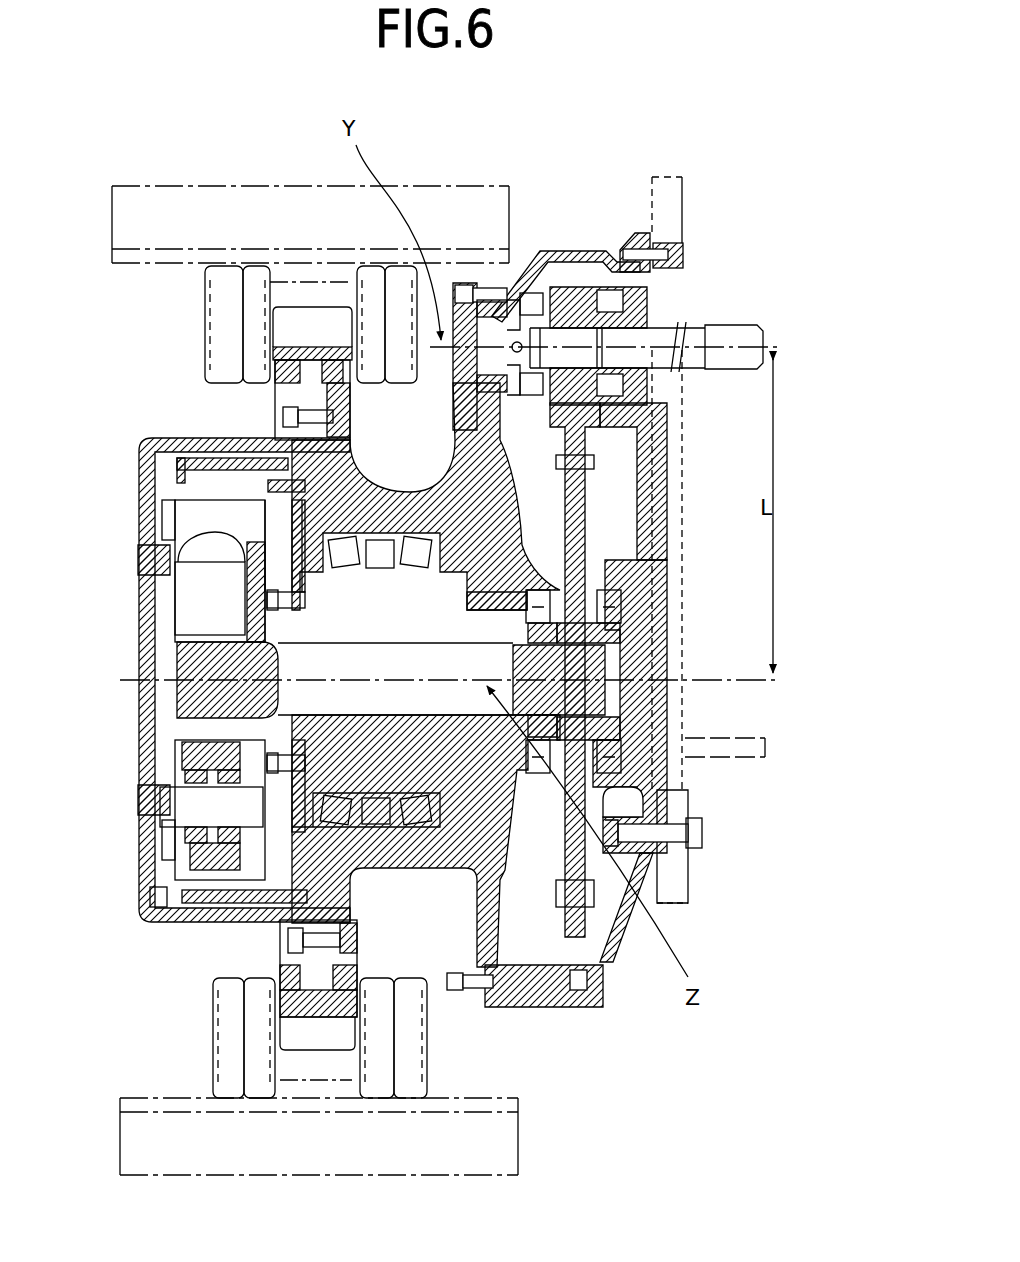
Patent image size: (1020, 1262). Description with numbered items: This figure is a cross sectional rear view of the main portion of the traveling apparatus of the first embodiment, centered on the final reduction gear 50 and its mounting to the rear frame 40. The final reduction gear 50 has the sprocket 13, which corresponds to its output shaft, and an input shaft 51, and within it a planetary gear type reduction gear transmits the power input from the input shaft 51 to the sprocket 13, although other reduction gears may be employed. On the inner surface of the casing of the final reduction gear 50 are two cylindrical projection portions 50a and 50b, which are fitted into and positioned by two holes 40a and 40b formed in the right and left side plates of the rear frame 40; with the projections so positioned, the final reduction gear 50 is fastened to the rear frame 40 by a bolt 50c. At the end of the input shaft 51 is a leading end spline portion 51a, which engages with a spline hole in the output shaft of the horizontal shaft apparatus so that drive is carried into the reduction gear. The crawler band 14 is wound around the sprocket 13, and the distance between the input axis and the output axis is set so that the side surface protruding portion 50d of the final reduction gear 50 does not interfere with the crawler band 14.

The sprocket 13 is at (300, 328).
The crawler band 14 is at (462, 202).
The rear frame 40 is at (650, 195).
The hole 40a is at (690, 255).
The hole 40b is at (688, 785).
The final reduction gear 50 is at (172, 440).
The cylindrical projection portion 50a is at (660, 492).
The cylindrical projection portion 50b is at (665, 540).
The bolt 50c is at (702, 838).
The side surface protruding portion 50d is at (518, 287).
The input shaft 51 is at (695, 345).
The leading end spline portion 51a is at (748, 322).